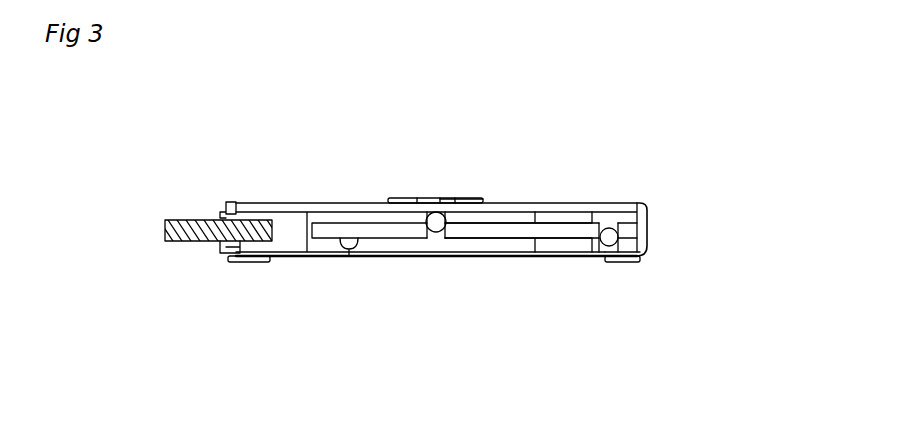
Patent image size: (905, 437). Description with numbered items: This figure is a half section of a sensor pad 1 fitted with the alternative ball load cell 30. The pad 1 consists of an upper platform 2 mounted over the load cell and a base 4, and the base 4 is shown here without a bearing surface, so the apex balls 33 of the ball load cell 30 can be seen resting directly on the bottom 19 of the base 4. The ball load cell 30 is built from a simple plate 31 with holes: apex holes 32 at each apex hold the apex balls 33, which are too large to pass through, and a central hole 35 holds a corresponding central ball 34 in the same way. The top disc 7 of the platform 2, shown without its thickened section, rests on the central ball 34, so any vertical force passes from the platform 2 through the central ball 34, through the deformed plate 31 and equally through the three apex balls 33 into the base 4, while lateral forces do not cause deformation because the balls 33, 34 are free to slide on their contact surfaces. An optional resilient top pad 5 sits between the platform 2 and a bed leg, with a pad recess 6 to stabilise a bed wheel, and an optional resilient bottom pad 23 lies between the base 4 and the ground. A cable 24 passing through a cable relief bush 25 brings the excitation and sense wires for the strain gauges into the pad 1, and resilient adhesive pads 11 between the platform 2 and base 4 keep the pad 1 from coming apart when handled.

The sensor pad 1 is at (659, 92).
The upper platform 2 is at (590, 202).
The base 4 is at (687, 233).
The resilient top pad 5 is at (400, 201).
The pad recess 6 is at (434, 212).
The top disc 7 is at (342, 203).
The resilient adhesive pads 11 is at (283, 238).
The bottom 19 is at (442, 253).
The resilient bottom pad 23 is at (625, 262).
The cable 24 is at (178, 228).
The cable relief bush 25 is at (218, 252).
The ball load cell 30 is at (320, 222).
The plate with holes 31 is at (503, 223).
The apex holes 32 is at (616, 231).
The apex balls 33 is at (345, 250).
The central ball 34 is at (445, 202).
The central hole 35 is at (432, 232).